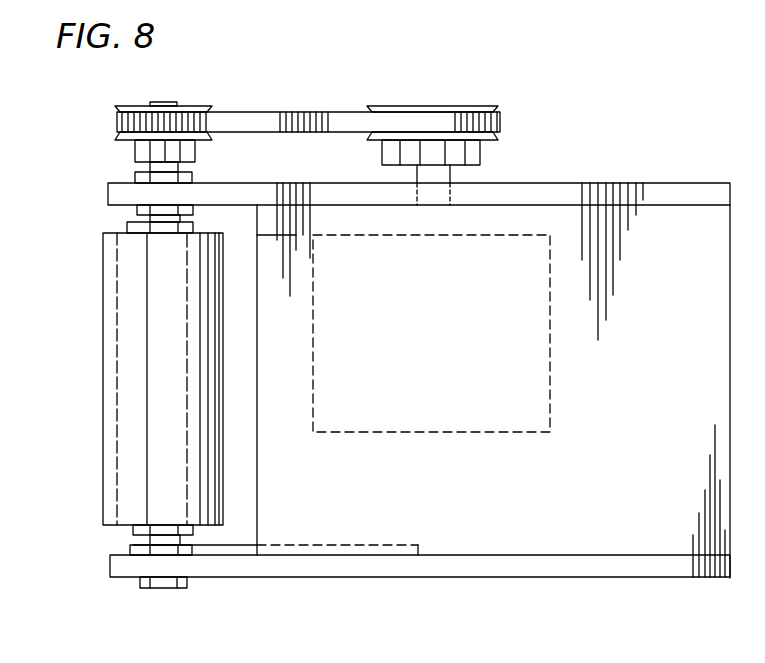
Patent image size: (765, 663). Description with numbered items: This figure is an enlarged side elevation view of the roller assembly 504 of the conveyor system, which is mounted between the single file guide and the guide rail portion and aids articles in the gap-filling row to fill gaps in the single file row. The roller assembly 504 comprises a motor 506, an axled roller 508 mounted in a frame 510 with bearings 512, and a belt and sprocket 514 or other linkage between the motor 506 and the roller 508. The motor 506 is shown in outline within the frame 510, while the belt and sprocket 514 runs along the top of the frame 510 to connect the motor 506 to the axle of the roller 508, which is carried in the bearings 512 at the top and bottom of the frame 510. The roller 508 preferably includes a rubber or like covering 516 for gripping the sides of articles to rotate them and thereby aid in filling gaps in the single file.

The roller assembly 504 is at (505, 178).
The motor 506 is at (552, 410).
The axled roller 508 is at (133, 233).
The frame 510 is at (672, 190).
The bearings 512 is at (140, 176).
The belt and sprocket 514 is at (323, 112).
The rubber covering 516 is at (118, 330).